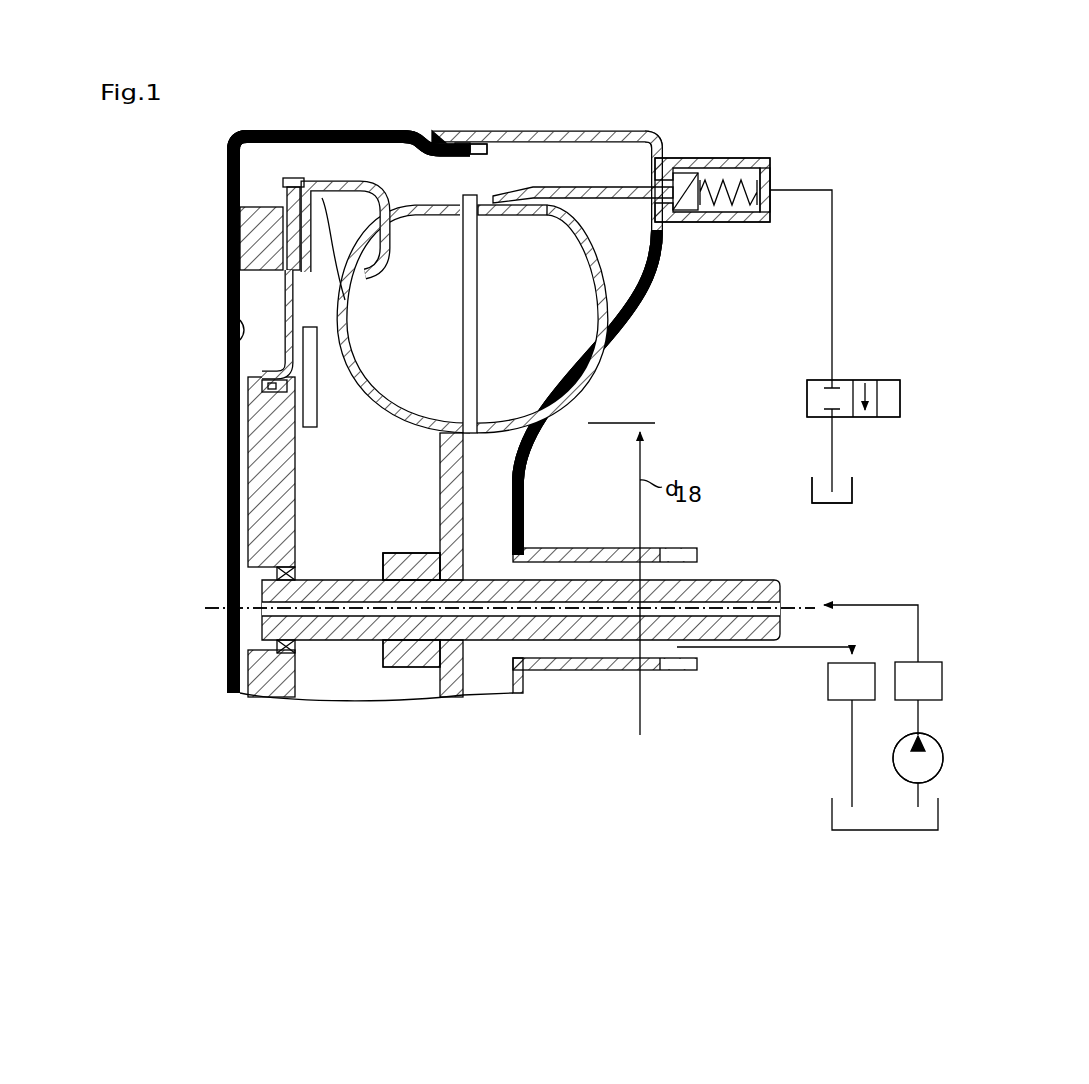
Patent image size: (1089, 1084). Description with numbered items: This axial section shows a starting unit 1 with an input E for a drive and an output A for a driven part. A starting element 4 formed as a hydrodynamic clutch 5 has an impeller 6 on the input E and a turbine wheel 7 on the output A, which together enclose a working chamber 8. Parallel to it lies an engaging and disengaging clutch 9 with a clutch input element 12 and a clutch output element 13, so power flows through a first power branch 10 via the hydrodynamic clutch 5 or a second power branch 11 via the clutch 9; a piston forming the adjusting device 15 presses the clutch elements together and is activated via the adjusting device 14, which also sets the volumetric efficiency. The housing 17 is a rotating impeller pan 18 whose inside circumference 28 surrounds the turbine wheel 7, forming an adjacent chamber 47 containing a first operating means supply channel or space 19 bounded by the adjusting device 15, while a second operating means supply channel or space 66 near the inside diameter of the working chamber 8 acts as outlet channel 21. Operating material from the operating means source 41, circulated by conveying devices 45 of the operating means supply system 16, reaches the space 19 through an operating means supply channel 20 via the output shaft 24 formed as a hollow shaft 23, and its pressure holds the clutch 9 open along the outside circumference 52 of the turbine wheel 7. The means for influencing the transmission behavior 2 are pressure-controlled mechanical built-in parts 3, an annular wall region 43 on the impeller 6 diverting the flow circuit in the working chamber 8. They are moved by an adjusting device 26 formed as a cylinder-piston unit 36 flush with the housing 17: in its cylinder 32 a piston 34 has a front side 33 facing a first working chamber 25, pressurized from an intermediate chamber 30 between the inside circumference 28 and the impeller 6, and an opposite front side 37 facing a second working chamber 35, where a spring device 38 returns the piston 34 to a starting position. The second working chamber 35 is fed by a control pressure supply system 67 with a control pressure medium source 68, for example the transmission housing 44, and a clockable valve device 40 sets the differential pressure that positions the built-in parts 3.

The starting unit 1 is at (547, 108).
The means for influencing the transmission behavior 2 is at (618, 170).
The pressure-controlled mechanical built-in parts 3 is at (352, 415).
The starting element 4 is at (487, 190).
The hydrodynamic clutch 5 is at (478, 149).
The impeller 6 is at (598, 350).
The turbine wheel 7 is at (387, 415).
The working chamber 8 is at (472, 320).
The engaging and disengaging clutch 9 is at (222, 232).
The first power branch 10 is at (588, 165).
The second power branch 11 is at (287, 275).
The clutch input element 12 is at (265, 238).
The clutch output element 13 is at (300, 228).
The adjusting device 14 is at (955, 663).
The adjusting device 15 is at (290, 350).
The operating means supply system 16 is at (955, 755).
The housing 17 is at (632, 310).
The impeller pan 18 is at (587, 392).
The first operating means supply channel or space 19 is at (262, 322).
The operating means supply channel 20 is at (262, 603).
The outlet channel 21 is at (487, 682).
The hollow shaft 23 is at (335, 650).
The output shaft 24 is at (411, 566).
The first working chamber 25 is at (660, 197).
The adjusting device 26 is at (647, 170).
The inside circumference 28 is at (462, 148).
The intermediate chamber 30 is at (465, 301).
The cylinder 32 is at (736, 212).
The front side 33 is at (672, 208).
The piston 34 is at (690, 212).
The second working chamber 35 is at (766, 212).
The cylinder-piston unit 36 is at (770, 152).
The front side 37 is at (735, 160).
The spring device 38 is at (775, 190).
The valve device 40 is at (903, 398).
The operating means source 41 is at (935, 820).
The wall region 43 is at (500, 215).
The housing 44 is at (845, 480).
The conveying devices 45 is at (940, 768).
The adjacent chamber 47 is at (418, 565).
The outside circumference 52 is at (345, 282).
The second operating means supply channel or space 66 is at (585, 585).
The control pressure supply system 67 is at (905, 372).
The control pressure medium source 68 is at (850, 497).
The output A is at (782, 598).
The input E is at (224, 590).